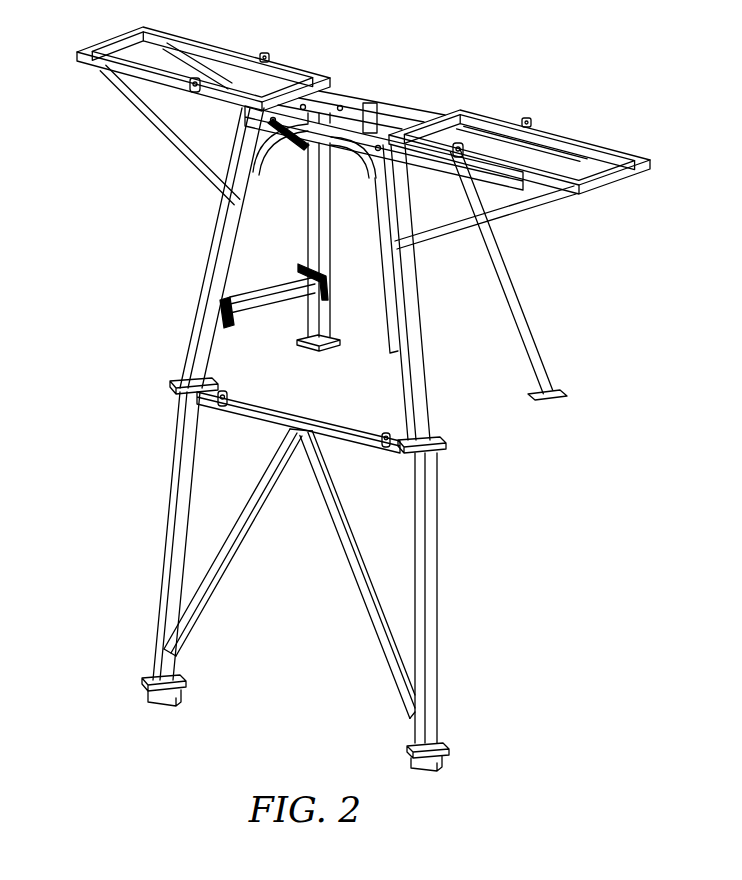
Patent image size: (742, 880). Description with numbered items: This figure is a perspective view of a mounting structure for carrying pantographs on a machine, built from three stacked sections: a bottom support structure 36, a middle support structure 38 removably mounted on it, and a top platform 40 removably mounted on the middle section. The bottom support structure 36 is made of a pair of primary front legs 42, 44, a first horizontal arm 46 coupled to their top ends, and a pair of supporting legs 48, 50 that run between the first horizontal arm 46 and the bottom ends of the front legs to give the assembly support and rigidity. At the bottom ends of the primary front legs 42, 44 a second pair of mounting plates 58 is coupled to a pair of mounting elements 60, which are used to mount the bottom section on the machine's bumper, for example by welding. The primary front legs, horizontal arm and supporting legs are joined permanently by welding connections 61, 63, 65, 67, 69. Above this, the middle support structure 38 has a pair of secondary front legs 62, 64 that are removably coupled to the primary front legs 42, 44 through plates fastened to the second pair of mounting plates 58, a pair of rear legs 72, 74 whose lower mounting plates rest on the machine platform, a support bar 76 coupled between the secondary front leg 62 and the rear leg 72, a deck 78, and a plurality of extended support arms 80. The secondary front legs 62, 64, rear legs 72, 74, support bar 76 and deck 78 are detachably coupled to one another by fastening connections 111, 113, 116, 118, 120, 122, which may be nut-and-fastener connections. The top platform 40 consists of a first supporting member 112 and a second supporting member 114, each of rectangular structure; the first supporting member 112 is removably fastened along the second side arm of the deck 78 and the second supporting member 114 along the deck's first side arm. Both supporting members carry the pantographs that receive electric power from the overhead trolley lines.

The bottom support structure 36 is at (150, 383).
The middle support structure 38 is at (130, 100).
The top platform 40 is at (381, 406).
The primary front leg 42 is at (168, 538).
The primary front leg 44 is at (438, 632).
The first horizontal arm 46 is at (358, 446).
The supporting leg 48 is at (229, 567).
The supporting leg 50 is at (362, 590).
The second pair of mounting plates 58 is at (186, 680).
The mounting elements 60 is at (178, 700).
The welding connection 61 is at (176, 655).
The secondary front leg 62 is at (194, 328).
The welding connection 63 is at (303, 436).
The secondary front leg 64 is at (425, 370).
The welding connection 65 is at (410, 716).
The welding connection 67 is at (199, 402).
The welding connection 69 is at (413, 456).
The rear leg 72 is at (307, 241).
The rear leg 74 is at (545, 363).
The support bar 76 is at (265, 316).
The deck 78 is at (393, 88).
The extended support arms 80 is at (196, 156).
The fastening connection 111 is at (269, 160).
The first supporting member 112 is at (293, 65).
The fastening connection 113 is at (360, 119).
The second supporting member 114 is at (583, 140).
The fastening connection 116 is at (481, 136).
The fastening connection 118 is at (367, 173).
The fastening connection 120 is at (288, 266).
The fastening connection 122 is at (229, 342).